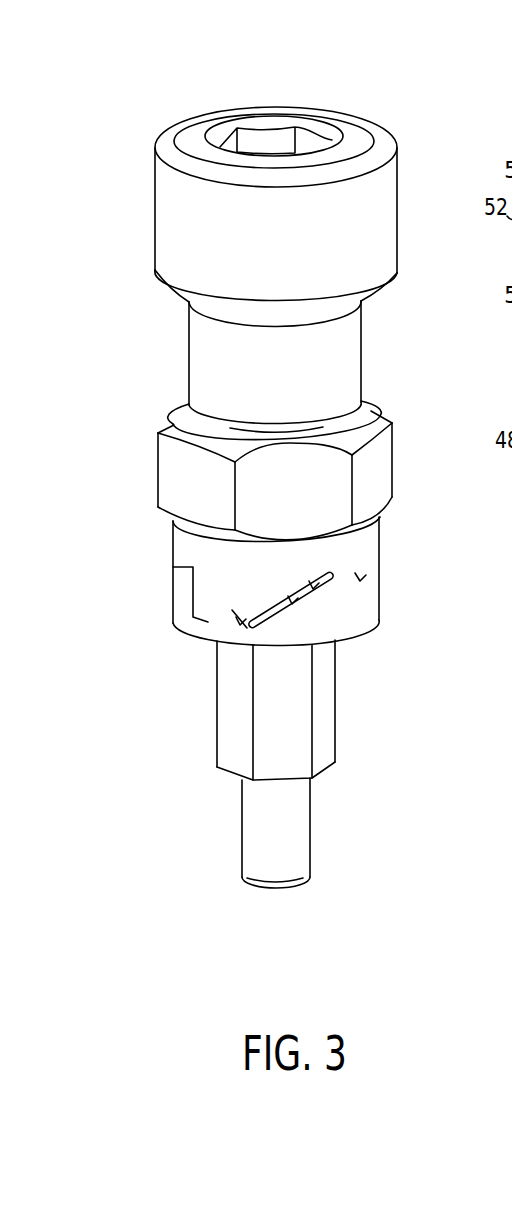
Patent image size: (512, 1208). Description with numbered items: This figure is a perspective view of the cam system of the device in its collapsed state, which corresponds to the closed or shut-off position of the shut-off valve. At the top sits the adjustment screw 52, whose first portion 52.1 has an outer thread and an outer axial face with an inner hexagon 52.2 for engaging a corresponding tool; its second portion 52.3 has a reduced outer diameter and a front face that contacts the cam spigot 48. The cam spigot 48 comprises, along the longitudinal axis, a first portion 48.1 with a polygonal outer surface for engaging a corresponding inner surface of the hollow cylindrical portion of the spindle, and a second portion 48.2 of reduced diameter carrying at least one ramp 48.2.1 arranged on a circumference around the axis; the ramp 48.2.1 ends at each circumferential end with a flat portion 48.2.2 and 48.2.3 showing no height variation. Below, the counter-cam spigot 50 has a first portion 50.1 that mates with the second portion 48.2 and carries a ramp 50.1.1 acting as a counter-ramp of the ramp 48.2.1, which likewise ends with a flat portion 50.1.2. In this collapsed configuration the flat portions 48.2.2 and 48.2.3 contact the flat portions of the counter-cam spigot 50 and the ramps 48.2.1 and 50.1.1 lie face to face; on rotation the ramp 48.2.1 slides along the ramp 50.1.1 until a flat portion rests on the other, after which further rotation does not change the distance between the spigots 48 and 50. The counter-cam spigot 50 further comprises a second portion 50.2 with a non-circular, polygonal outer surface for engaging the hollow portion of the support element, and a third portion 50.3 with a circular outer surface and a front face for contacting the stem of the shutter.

The adjustment screw 52 is at (118, 263).
The first portion of the adjustment screw 52.1 is at (173, 222).
The inner hexagon 52.2 is at (275, 137).
The second portion of the adjustment screw 52.3 is at (188, 355).
The cam spigot 48 is at (133, 490).
The first portion of the cam spigot 48.1 is at (180, 460).
The second portion of the cam spigot 48.2 is at (190, 548).
The ramp 48.2.1 is at (292, 601).
The flat portion 48.2.2 is at (240, 623).
The flat portion 48.2.3 is at (360, 578).
The counter-cam spigot 50 is at (135, 587).
The first portion of the counter-cam spigot 50.1 is at (180, 623).
The ramp 50.1.1 is at (314, 587).
The flat portion 50.1.2 is at (232, 610).
The second portion of the counter-cam spigot 50.2 is at (217, 745).
The third portion of the counter-cam spigot 50.3 is at (257, 843).